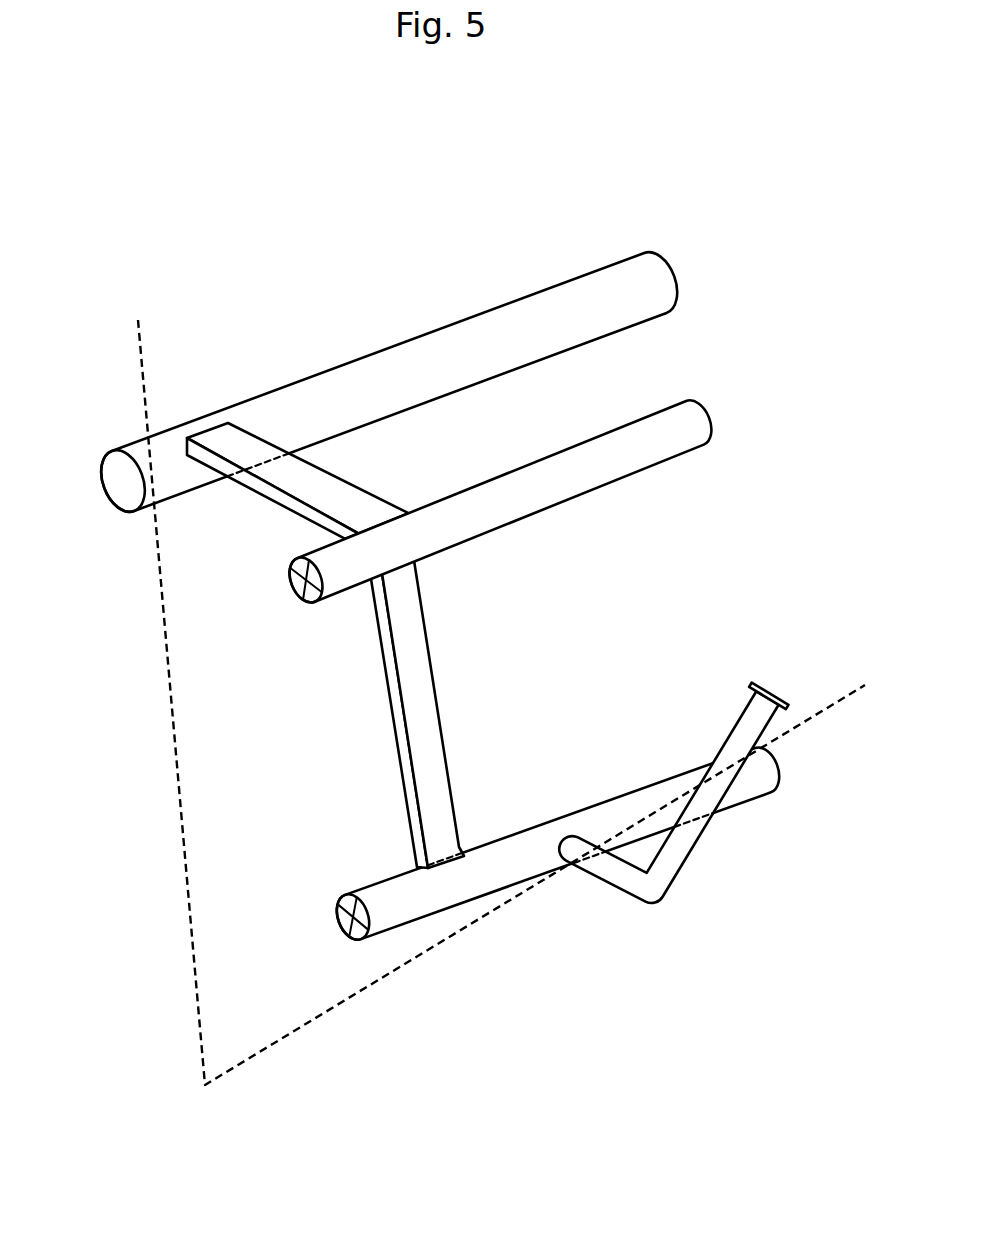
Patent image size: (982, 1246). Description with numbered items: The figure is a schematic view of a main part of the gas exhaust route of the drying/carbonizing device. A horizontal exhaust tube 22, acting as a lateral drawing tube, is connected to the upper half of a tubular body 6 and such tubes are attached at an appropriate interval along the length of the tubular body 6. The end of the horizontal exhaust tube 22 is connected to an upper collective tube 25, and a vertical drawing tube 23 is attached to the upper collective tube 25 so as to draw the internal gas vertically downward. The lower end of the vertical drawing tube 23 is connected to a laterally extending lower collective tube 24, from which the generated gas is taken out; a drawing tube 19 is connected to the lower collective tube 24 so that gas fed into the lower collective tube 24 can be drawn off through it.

The tubular body 6 is at (378, 372).
The upper collective tube 25 is at (640, 435).
The horizontal exhaust tube 22 is at (303, 483).
The vertical drawing tube 23 is at (418, 697).
The lower collective tube 24 is at (503, 866).
The drawing tube 19 is at (684, 852).